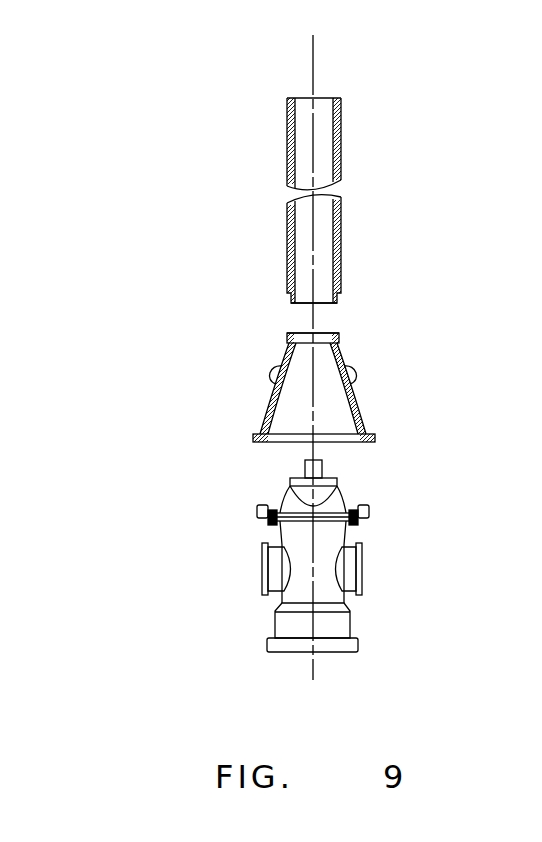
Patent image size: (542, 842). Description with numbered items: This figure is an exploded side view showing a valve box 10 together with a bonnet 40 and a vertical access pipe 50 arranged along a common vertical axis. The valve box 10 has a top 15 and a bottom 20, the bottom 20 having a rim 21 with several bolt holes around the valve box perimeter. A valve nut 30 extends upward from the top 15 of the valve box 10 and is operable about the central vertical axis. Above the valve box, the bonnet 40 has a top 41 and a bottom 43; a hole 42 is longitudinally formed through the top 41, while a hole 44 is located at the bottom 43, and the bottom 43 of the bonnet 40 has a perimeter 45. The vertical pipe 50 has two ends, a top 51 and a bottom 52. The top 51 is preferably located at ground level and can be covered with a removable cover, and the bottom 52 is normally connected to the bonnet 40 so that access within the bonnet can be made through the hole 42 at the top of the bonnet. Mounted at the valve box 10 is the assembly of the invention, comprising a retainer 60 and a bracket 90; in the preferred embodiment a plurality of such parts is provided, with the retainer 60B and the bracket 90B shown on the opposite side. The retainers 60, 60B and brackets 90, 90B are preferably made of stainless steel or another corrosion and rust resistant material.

The valve box 10 is at (314, 545).
The top 15 is at (349, 512).
The bottom 20 is at (358, 543).
The rim 21 is at (332, 527).
The valve nut 30 is at (324, 462).
The bonnet 40 is at (310, 386).
The top 41 is at (340, 334).
The hole 42 is at (290, 333).
The bottom 43 is at (367, 430).
The hole 44 is at (280, 442).
The perimeter 45 is at (257, 436).
The vertical pipe 50 is at (315, 180).
The top 51 is at (320, 98).
The bottom 52 is at (325, 306).
The retainer 60 is at (358, 523).
The retainer 60B is at (268, 518).
The bracket 90 is at (369, 510).
The bracket 90B is at (258, 511).